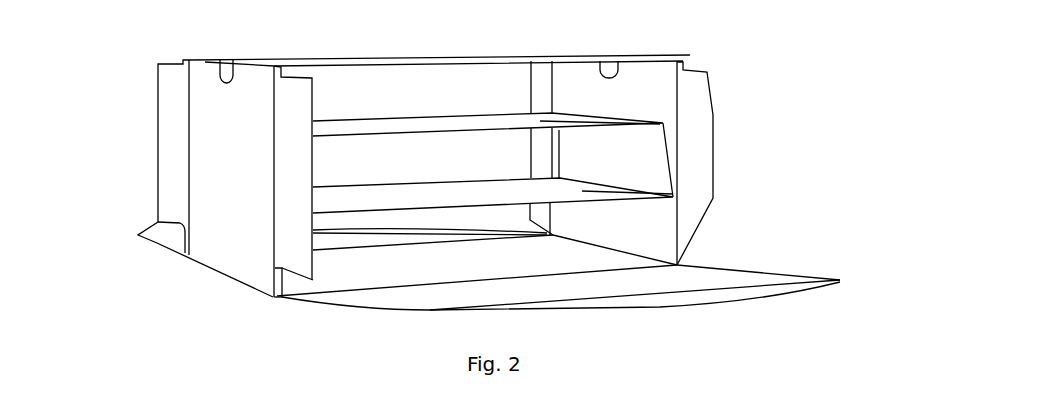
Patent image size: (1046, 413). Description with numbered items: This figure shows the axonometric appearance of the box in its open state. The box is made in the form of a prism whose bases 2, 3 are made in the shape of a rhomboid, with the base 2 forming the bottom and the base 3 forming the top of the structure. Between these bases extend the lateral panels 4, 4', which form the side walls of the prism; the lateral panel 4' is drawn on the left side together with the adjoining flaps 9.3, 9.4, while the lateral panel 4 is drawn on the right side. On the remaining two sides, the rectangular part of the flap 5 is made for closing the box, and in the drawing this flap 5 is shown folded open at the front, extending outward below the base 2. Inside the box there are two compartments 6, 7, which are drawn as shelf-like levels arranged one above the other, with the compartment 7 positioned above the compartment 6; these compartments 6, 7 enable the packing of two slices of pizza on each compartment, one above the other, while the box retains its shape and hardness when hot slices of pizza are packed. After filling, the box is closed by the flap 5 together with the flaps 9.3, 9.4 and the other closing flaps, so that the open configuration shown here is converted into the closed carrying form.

The base 2 is at (438, 263).
The base 3 is at (690, 58).
The lateral panel 4 is at (765, 163).
The lateral panel 4' is at (160, 181).
The flap 5 is at (687, 275).
The compartment 6 is at (540, 193).
The compartment 7 is at (663, 126).
The flap 9.3 is at (172, 123).
The flap 9.4 is at (293, 214).